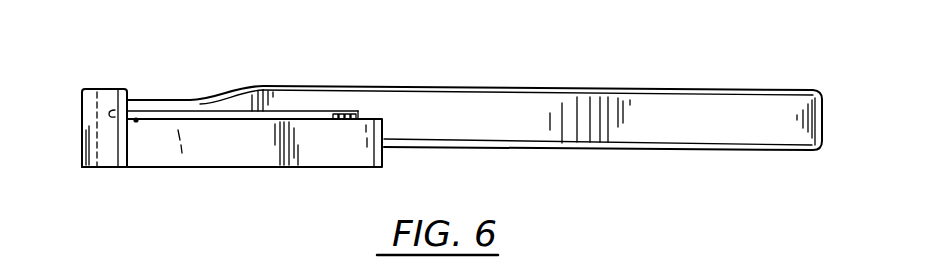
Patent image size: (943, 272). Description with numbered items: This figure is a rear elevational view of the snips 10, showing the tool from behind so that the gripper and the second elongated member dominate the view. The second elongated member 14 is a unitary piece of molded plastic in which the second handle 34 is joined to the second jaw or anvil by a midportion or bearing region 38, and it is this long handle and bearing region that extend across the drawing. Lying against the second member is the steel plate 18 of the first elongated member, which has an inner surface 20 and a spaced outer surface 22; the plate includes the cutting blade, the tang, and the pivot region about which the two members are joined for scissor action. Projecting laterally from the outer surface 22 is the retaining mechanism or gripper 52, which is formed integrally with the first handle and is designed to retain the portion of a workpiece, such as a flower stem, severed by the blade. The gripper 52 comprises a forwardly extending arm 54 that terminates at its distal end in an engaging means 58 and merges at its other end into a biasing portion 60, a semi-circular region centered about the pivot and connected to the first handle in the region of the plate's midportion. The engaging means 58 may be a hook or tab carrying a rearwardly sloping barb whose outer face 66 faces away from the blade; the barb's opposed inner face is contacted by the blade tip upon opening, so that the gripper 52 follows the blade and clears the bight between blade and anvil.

The snips 10 is at (122, 34).
The second elongated member 14 is at (708, 50).
The steel plate 18 is at (170, 112).
The inner surface 20 is at (217, 110).
The outer surface 22 is at (139, 117).
The second handle 34 is at (735, 103).
The bearing region 38 is at (302, 90).
The gripper 52 is at (228, 176).
The arm 54 is at (173, 158).
The engaging means 58 is at (102, 166).
The biasing portion 60 is at (342, 163).
The outer face 66 is at (88, 112).